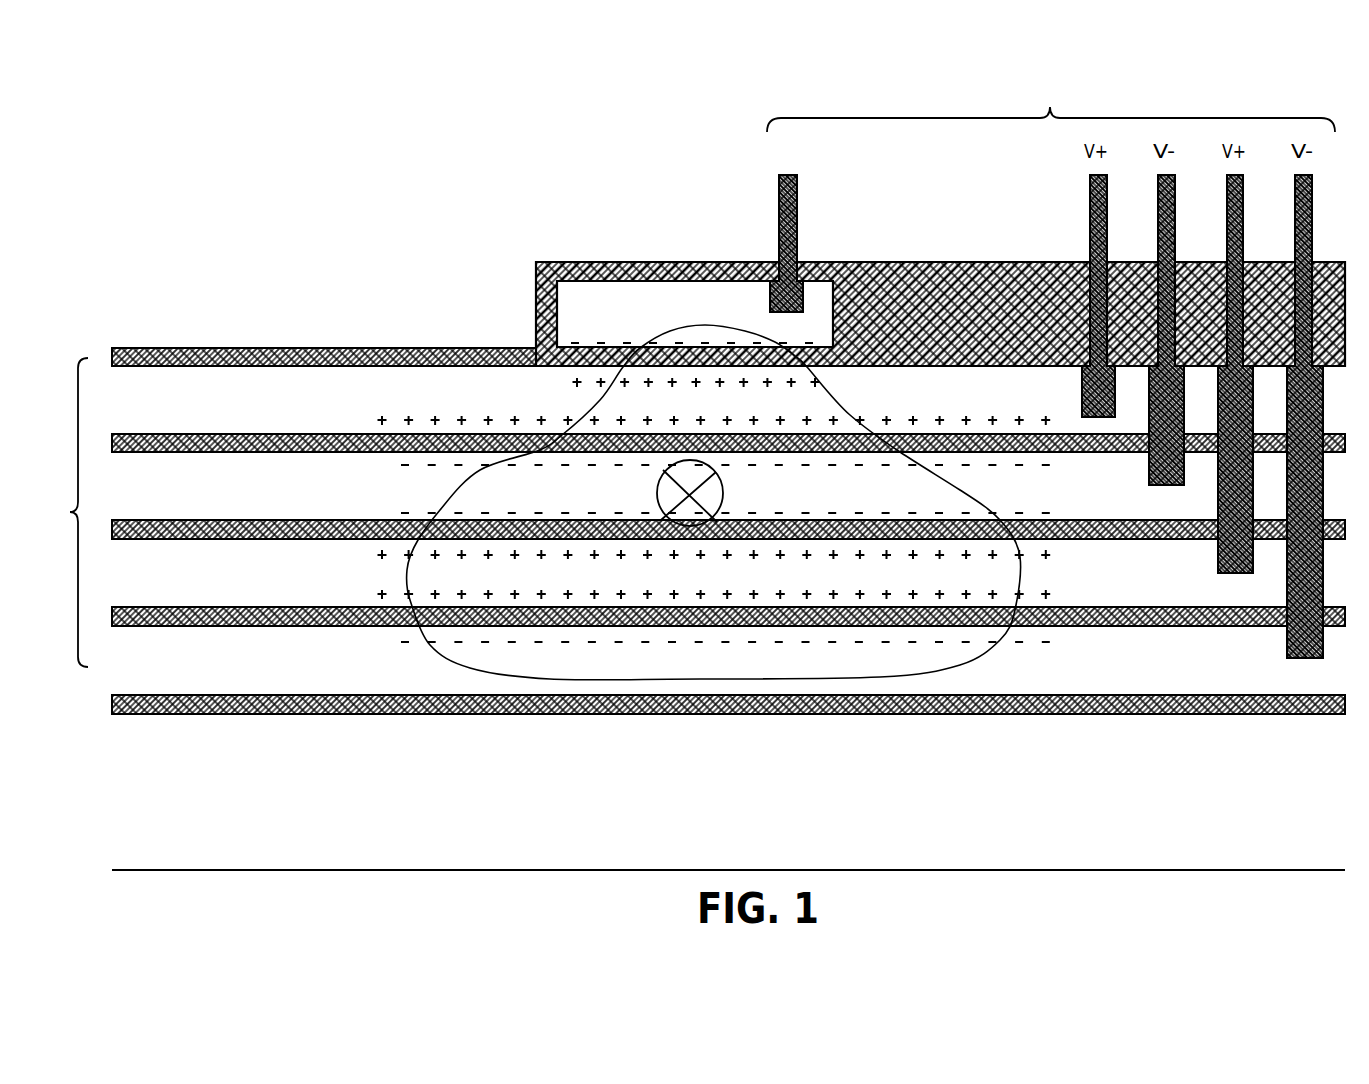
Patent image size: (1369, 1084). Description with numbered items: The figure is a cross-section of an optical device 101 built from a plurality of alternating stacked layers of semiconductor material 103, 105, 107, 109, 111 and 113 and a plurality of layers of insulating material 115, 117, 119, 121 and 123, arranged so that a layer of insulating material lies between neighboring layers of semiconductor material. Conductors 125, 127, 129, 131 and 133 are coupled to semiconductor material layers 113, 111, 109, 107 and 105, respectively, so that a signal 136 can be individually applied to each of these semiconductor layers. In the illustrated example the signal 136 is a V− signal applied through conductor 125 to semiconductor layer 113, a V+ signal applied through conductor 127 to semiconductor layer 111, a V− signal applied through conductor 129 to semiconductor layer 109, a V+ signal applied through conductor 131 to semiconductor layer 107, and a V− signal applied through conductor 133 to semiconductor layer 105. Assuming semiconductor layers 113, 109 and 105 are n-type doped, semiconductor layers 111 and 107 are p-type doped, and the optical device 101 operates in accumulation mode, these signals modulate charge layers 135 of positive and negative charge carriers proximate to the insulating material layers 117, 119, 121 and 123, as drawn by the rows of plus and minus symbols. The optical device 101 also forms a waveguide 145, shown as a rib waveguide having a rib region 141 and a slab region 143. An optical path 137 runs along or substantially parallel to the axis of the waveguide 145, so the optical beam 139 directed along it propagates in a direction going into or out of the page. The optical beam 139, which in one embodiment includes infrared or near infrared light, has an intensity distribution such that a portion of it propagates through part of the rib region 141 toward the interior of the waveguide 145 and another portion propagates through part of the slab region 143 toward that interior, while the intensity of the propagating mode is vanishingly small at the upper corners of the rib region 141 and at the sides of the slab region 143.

The optical device 101 is at (162, 129).
The layer of semiconductor material 103 is at (157, 792).
The layer of semiconductor material 105 is at (149, 674).
The layer of semiconductor material 107 is at (149, 587).
The layer of semiconductor material 109 is at (149, 504).
The layer of semiconductor material 111 is at (149, 416).
The layer of semiconductor material 113 is at (596, 329).
The layer of insulating material 115 is at (252, 696).
The layer of insulating material 117 is at (252, 608).
The layer of insulating material 119 is at (252, 522).
The layer of insulating material 121 is at (252, 436).
The layer of insulating material 123 is at (252, 348).
The conductor 125 is at (778, 213).
The conductor 127 is at (1089, 222).
The conductor 129 is at (1157, 222).
The conductor 131 is at (1226, 222).
The conductor 133 is at (1294, 222).
The charge layers 135 is at (562, 381).
The signal 136 is at (1095, 86).
The optical path 137 is at (723, 490).
The optical beam 139 is at (1001, 648).
The rib region 141 is at (525, 263).
The slab region 143 is at (53, 512).
The waveguide 145 is at (351, 285).